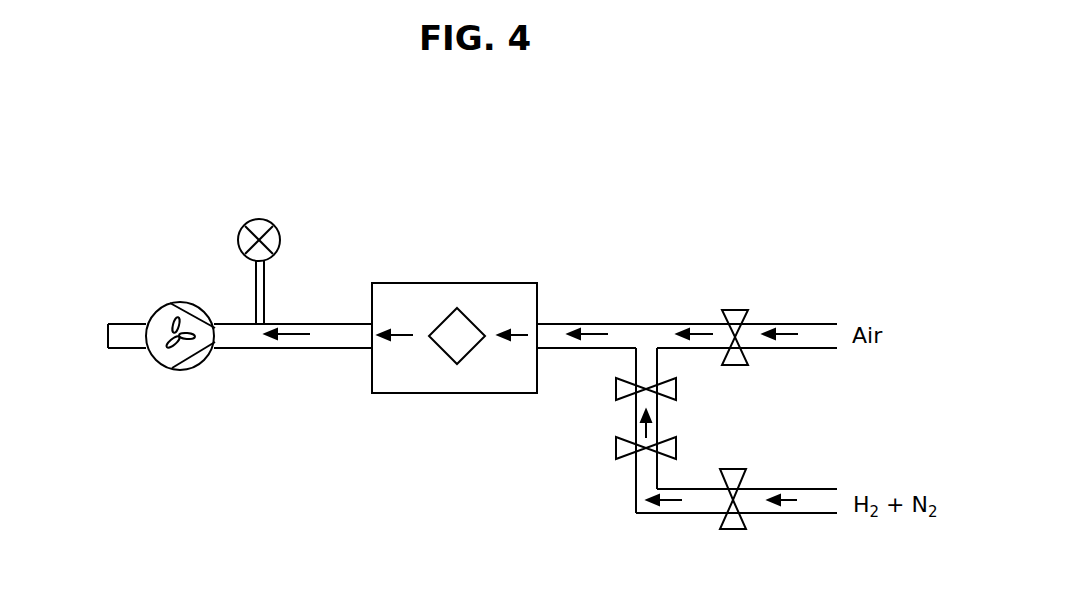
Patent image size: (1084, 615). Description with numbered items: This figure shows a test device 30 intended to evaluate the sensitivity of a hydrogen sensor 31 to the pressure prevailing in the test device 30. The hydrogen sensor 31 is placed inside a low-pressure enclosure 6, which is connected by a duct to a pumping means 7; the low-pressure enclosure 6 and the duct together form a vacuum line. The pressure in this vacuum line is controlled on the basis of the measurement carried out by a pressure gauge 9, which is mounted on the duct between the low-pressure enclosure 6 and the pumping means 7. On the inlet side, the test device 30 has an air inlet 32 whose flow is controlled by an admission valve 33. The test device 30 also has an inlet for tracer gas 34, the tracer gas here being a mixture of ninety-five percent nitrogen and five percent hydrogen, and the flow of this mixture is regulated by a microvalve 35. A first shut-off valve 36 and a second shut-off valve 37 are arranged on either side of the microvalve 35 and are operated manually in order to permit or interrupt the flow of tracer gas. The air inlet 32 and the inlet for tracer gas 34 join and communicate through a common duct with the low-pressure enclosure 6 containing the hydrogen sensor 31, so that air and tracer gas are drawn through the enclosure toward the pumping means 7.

The test device 30 is at (664, 239).
The pumping means 7 is at (179, 322).
The pressure gauge 9 is at (256, 228).
The low-pressure enclosure 6 is at (391, 302).
The hydrogen sensor 31 is at (457, 342).
The admission valve 33 is at (735, 322).
The air inlet 32 is at (833, 333).
The second shut-off valve 37 is at (665, 388).
The microvalve 35 is at (615, 447).
The first shut-off valve 36 is at (733, 517).
The inlet for tracer gas 34 is at (827, 500).